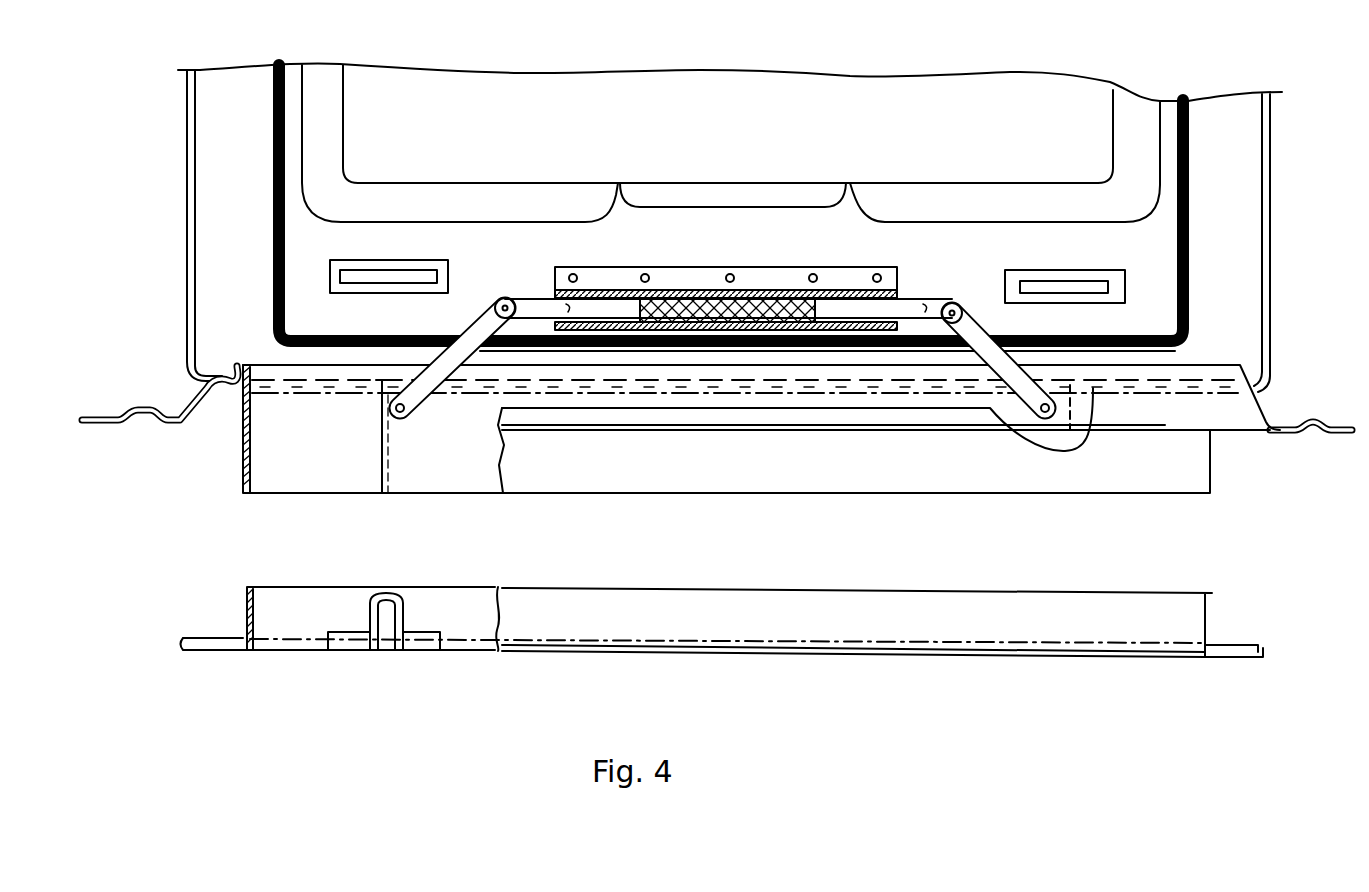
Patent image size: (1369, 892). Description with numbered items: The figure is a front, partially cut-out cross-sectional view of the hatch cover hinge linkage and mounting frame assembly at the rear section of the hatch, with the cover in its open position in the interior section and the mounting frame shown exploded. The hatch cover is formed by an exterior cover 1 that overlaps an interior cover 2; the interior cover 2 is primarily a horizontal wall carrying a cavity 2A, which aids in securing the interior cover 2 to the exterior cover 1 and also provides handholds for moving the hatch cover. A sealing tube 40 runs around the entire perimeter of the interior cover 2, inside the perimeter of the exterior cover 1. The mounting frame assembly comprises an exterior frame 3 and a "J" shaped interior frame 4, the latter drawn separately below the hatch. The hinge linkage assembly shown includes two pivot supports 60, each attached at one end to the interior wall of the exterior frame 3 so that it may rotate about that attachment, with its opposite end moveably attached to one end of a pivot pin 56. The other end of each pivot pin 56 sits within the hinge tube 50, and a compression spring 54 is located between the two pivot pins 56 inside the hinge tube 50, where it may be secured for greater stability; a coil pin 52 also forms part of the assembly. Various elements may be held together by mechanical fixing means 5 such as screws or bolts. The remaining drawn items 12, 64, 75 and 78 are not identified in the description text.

The exterior cover 1 is at (187, 230).
The interior cover 2 is at (293, 187).
The cavity 2A is at (1110, 287).
The exterior frame 3 is at (190, 410).
The interior frame 4 is at (247, 620).
The mechanical fixing means 5 is at (815, 274).
The clip 12 is at (328, 632).
The sealing tube 40 is at (1188, 207).
The hinge tube 50 is at (620, 293).
The coil pin 52 is at (722, 300).
The compression spring 54 is at (762, 348).
The pivot pin 56 is at (925, 306).
The pivot support 60 is at (456, 352).
The hatched plate 64 is at (560, 270).
The pivot pin 75 is at (400, 412).
The pivot 78 is at (499, 302).